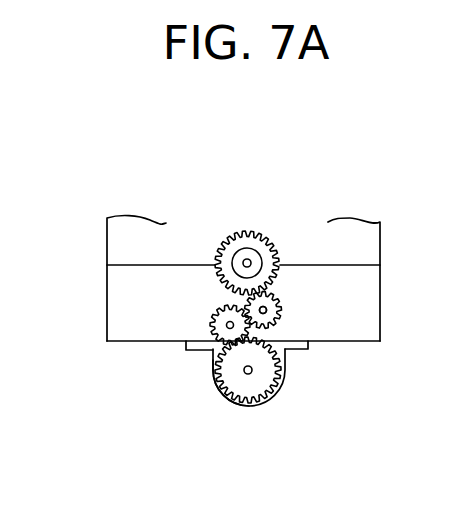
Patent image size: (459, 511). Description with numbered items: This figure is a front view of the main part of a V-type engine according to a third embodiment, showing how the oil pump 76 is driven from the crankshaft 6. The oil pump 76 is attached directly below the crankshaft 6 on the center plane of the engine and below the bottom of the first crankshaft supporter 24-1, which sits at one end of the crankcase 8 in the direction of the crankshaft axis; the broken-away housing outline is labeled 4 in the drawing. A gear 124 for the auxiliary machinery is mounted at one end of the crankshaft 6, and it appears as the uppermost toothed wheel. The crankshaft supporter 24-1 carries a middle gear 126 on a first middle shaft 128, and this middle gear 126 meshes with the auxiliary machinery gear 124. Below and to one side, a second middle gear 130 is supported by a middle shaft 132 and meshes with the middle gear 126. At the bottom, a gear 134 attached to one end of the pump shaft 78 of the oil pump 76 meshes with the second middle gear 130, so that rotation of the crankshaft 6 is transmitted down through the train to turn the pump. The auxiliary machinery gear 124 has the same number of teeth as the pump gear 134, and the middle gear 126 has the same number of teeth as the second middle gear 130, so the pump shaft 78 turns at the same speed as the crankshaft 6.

The apparatus main body 4 is at (104, 237).
The crankshaft 6 is at (259, 252).
The crankcase 8 is at (100, 312).
The first crankshaft supporter 24-1 is at (138, 330).
The oil pump 76 is at (219, 408).
The pump shaft 78 is at (248, 375).
The gear for the auxiliary machinery 124 is at (240, 237).
The middle gear 126 is at (267, 310).
The first middle shaft 128 is at (282, 313).
The second middle gear 130 is at (227, 326).
The middle shaft 132 is at (224, 343).
The pump gear 134 is at (284, 389).